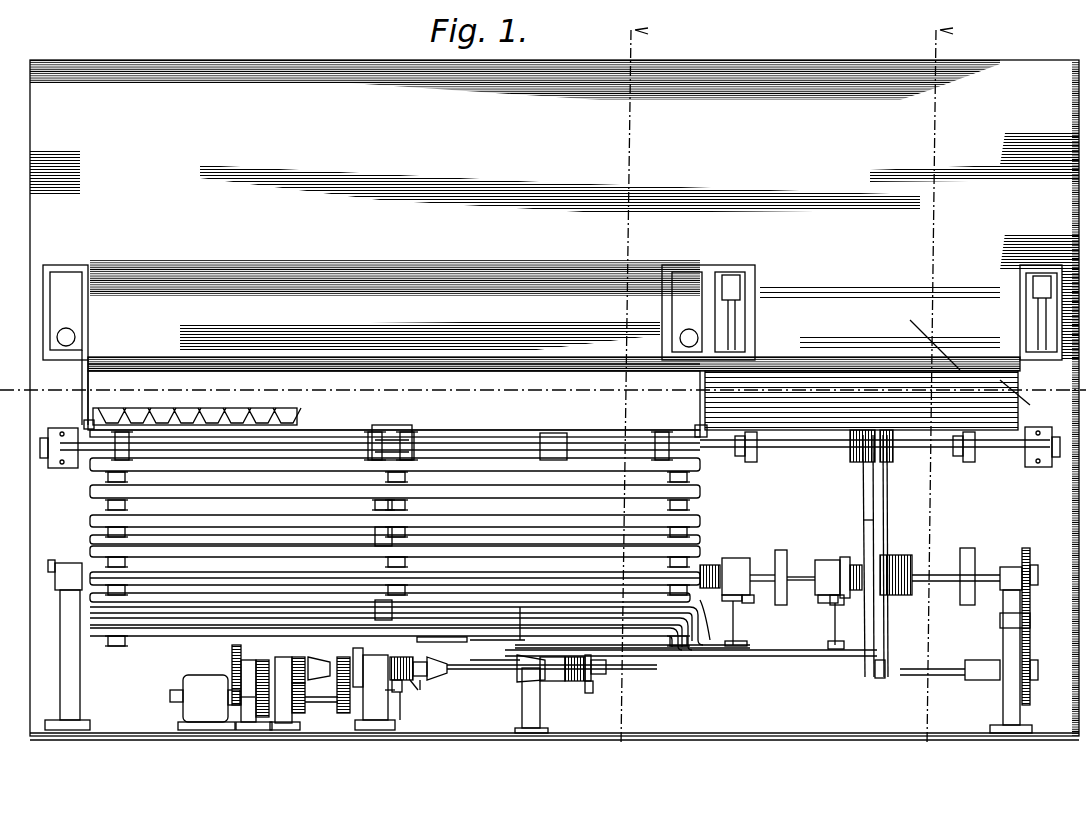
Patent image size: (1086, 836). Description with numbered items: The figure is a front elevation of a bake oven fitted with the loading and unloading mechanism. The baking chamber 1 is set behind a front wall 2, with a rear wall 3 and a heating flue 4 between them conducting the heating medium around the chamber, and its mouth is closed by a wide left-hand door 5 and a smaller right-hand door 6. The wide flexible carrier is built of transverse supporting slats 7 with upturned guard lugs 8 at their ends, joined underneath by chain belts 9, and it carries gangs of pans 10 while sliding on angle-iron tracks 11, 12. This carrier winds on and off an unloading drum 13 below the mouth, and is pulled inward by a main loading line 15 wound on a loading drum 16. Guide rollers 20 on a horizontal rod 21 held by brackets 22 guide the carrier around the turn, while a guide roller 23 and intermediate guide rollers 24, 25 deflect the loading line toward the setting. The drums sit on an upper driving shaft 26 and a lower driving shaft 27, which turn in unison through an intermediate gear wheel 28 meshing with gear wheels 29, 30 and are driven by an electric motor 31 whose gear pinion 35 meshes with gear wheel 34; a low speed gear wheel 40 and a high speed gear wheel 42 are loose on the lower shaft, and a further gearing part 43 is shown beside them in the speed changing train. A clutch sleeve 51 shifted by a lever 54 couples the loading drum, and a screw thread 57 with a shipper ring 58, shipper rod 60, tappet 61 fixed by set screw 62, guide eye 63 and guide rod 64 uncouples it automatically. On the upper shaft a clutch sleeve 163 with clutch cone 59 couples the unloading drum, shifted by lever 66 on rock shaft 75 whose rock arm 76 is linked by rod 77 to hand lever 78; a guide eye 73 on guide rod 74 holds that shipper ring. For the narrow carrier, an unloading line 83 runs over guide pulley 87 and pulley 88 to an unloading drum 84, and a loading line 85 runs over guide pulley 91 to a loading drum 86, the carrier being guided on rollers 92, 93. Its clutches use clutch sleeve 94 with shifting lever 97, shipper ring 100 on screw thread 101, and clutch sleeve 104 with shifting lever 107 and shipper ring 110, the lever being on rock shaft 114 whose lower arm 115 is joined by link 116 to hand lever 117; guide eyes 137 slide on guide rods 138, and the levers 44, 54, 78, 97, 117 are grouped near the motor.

The baking chamber 1 is at (554, 393).
The front wall 2 is at (543, 400).
The rear wall 3 is at (936, 387).
The heating flue 4 is at (631, 387).
The door 5 is at (355, 365).
The door 6 is at (675, 688).
The supporting slats 7 is at (252, 498).
The guard lugs 8 is at (92, 425).
The chain belts 9 is at (125, 505).
The pans 10 is at (300, 417).
The track 11 is at (88, 427).
The track 12 is at (698, 427).
The unloading drum 13 is at (82, 565).
The main loading line 15 is at (372, 506).
The loading drum 16 is at (374, 682).
The guide rollers 20 is at (412, 435).
The horizontal rod 21 is at (92, 455).
The brackets 22 is at (60, 446).
The guide roller 23 is at (378, 428).
The intermediate guide roller 24 is at (372, 540).
The intermediate guide roller 25 is at (372, 612).
The upper driving shaft 26 is at (1005, 568).
The lower driving shaft 27 is at (945, 675).
The intermediate gear wheel 28 is at (1031, 622).
The gear wheel 29 is at (1031, 555).
The gear wheel 30 is at (1031, 700).
The electric motor 31 is at (185, 682).
The gear wheel 34 is at (234, 650).
The gear pinion 35 is at (240, 698).
The low speed gear wheel 40 is at (265, 660).
The high speed gear wheel 42 is at (343, 658).
The bevel gear 43 is at (312, 660).
The lever 44 is at (310, 700).
The clutch sleeve 51 is at (432, 692).
The shifting lever 54 is at (455, 669).
The screw thread 57 is at (418, 690).
The shipper ring 58 is at (400, 657).
The clutch cone 59 is at (710, 565).
The shipper rod 60 is at (440, 680).
The tappet 61 is at (420, 660).
The set screw 62 is at (404, 707).
The guide eye 63 is at (396, 695).
The guide rod 64 is at (385, 692).
The shifting lever 66 is at (738, 558).
The guide eye 73 is at (728, 601).
The guide rod 74 is at (710, 620).
The rock shaft 75 is at (734, 628).
The rock arm 76 is at (748, 643).
The rod 77 is at (622, 600).
The hand lever 78 is at (467, 640).
The unloading line 83 is at (863, 510).
The unloading drum 84 is at (880, 678).
The loading line 85 is at (888, 508).
The loading drum 86 is at (900, 557).
The guide pulley 87 is at (852, 455).
The guide pulley 88 is at (856, 527).
The guide pulley 91 is at (892, 455).
The rollers 92 is at (752, 462).
The rollers 93 is at (985, 538).
The clutch sleeve 94 is at (548, 682).
The shifting lever 97 is at (512, 662).
The shipper ring 100 is at (593, 683).
The screw thread 101 is at (575, 682).
The clutch sleeve 104 is at (824, 567).
The shifting lever 107 is at (820, 597).
The shipper ring 110 is at (853, 567).
The rock shaft 114 is at (835, 628).
The lower arm 115 is at (828, 645).
The link 116 is at (740, 649).
The hand lever 117 is at (525, 640).
The guide eyes 137 is at (605, 675).
The guide rods 138 is at (560, 682).
The clutch sleeve 163 is at (755, 600).